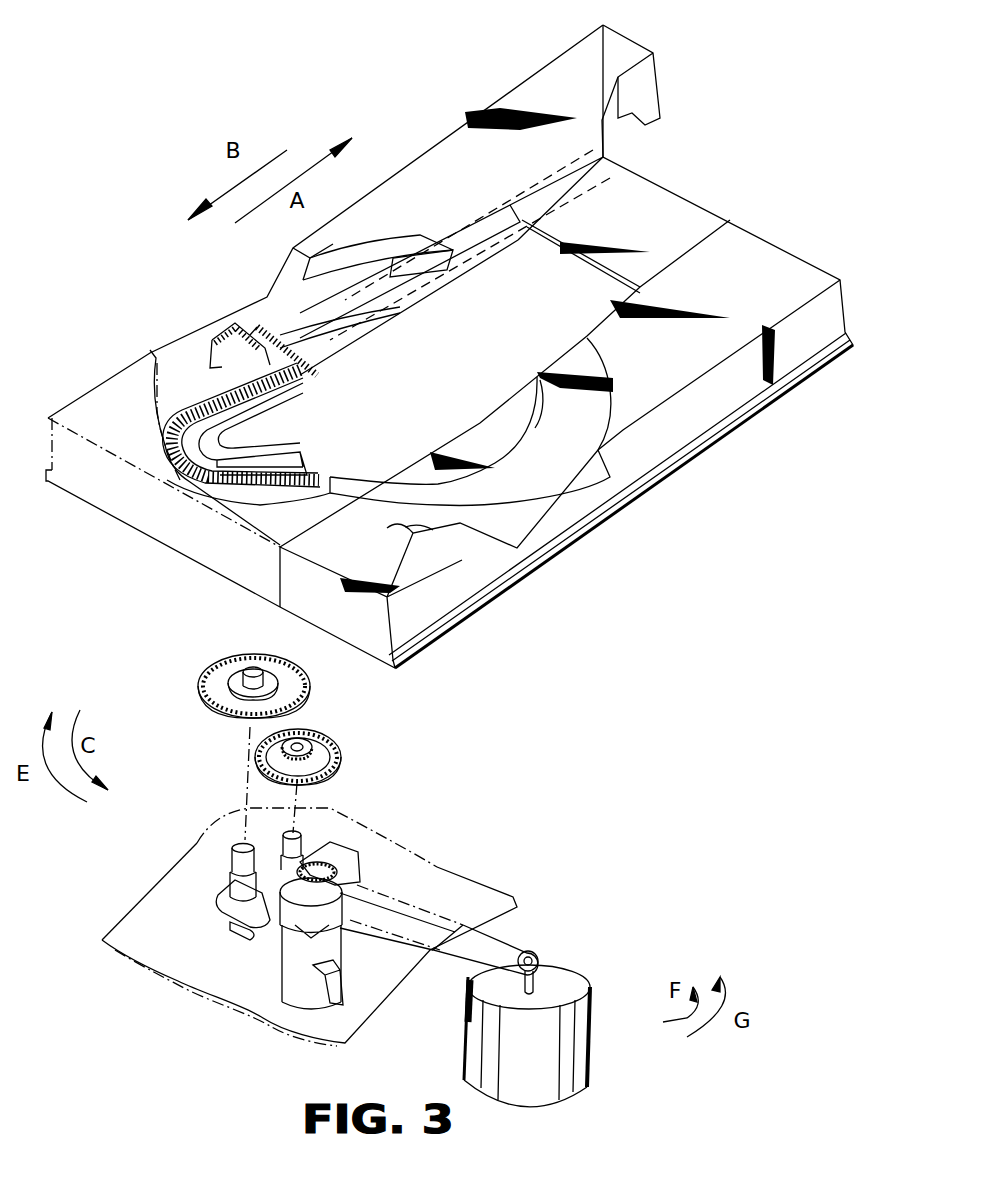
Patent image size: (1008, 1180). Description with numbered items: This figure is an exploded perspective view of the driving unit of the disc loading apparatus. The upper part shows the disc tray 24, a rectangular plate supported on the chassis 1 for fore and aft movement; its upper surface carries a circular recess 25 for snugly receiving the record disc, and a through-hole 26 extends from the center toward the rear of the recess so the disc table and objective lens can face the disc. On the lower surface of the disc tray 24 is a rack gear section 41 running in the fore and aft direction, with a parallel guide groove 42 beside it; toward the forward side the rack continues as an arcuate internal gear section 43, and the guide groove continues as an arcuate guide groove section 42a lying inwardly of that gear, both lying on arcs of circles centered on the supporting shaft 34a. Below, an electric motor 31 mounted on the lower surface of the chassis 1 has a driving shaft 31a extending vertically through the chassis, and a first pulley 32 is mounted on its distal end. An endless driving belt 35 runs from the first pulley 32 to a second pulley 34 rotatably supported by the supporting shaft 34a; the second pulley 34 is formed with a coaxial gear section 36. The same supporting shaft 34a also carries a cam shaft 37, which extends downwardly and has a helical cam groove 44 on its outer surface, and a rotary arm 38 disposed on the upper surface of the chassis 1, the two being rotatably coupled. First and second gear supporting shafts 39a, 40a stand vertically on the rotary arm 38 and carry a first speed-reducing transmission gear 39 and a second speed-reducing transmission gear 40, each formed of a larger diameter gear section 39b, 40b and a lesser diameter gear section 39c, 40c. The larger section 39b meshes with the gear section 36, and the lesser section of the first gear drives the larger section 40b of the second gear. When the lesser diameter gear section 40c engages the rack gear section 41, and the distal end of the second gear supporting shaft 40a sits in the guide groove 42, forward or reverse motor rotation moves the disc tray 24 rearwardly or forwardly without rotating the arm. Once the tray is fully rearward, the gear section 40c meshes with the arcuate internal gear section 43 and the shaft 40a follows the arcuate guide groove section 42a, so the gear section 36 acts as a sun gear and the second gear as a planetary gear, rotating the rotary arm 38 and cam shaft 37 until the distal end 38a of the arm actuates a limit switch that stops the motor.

The chassis 1 is at (452, 880).
The disc tray 24 is at (655, 447).
The circular recess 25 is at (486, 575).
The through-hole 26 is at (563, 513).
The electric motor 31 is at (573, 1047).
The driving shaft 31a is at (540, 987).
The first pulley 32 is at (542, 963).
The second pulley 34 is at (380, 881).
The supporting shaft 34a is at (337, 855).
The endless driving belt 35 is at (515, 940).
The gear section 36 is at (273, 903).
The cam shaft 37 is at (280, 977).
The rotary arm 38 is at (219, 921).
The distal end of the rotary arm 38a is at (237, 920).
The first speed-reducing transmission gear 39 is at (342, 764).
The first gear supporting shaft 39a is at (293, 850).
The larger diameter gear section 39b is at (313, 730).
The lesser diameter gear section 39c is at (315, 748).
The second speed-reducing transmission gear 40 is at (231, 747).
The second gear supporting shaft 40a is at (232, 862).
The larger diameter gear section 40b is at (240, 723).
The lesser diameter gear section 40c is at (240, 705).
The rack gear section 41 is at (402, 245).
The guide groove 42 is at (291, 427).
The arcuate guide groove section 42a is at (283, 447).
The arcuate internal gear section 43 is at (190, 480).
The helical cam groove 44 is at (343, 968).